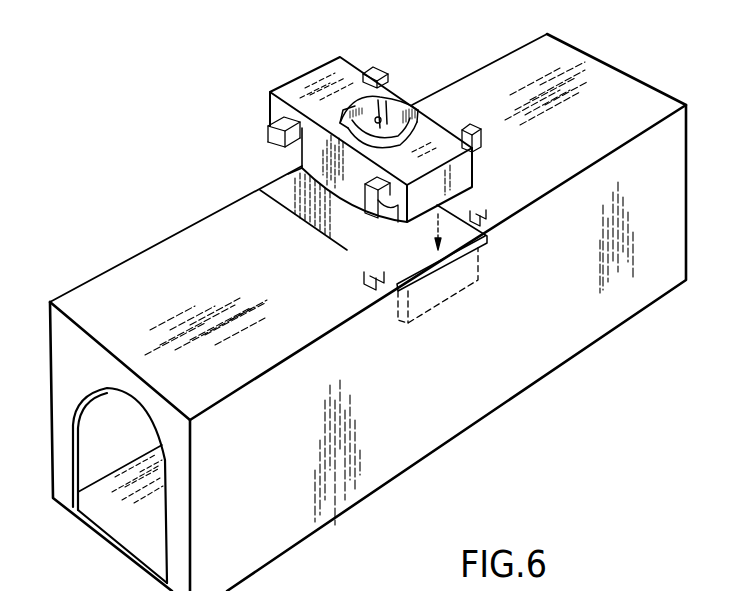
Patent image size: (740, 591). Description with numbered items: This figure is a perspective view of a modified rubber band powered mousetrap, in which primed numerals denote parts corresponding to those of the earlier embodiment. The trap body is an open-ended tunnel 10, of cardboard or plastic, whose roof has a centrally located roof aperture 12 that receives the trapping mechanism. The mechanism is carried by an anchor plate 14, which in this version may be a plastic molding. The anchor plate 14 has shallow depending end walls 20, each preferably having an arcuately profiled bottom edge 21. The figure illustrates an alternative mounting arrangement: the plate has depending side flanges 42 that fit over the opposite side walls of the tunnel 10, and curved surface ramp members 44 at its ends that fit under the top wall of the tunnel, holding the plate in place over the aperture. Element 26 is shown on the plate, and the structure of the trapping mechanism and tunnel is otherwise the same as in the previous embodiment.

The tunnel 10 is at (153, 262).
The roof aperture 12 is at (277, 210).
The anchor plate 14 is at (317, 83).
The depending end wall 20 is at (293, 172).
The arcuately profiled bottom edge 21 is at (347, 197).
The saddle member 26 is at (402, 88).
The depending side flange 42 is at (277, 143).
The curved surface ramp member 44 is at (273, 126).